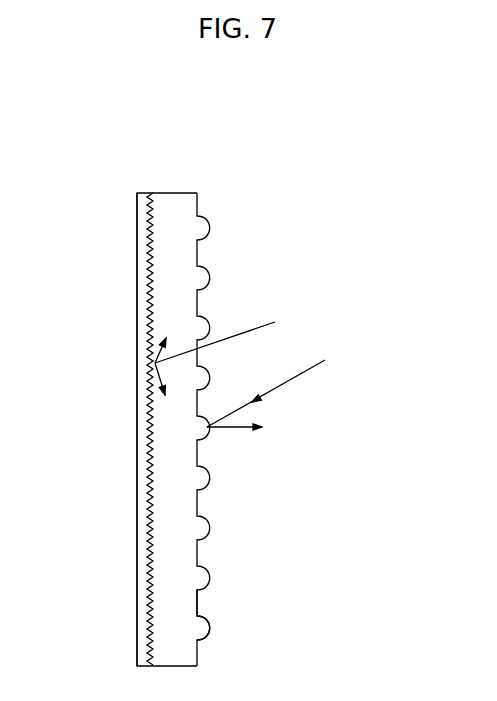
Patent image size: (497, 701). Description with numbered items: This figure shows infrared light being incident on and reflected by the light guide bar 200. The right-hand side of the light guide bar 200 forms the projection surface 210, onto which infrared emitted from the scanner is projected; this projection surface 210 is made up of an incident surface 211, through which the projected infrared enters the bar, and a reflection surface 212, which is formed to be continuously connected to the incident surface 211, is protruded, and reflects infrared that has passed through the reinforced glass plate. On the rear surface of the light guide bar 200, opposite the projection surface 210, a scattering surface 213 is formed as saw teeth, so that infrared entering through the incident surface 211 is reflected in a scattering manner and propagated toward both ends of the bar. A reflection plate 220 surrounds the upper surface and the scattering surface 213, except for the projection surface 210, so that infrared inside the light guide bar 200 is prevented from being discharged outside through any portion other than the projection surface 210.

The light guide bar 200 is at (207, 184).
The projection surface 210 is at (289, 583).
The incident surface 211 is at (198, 601).
The reflection surface 212 is at (206, 628).
The scattering surface 213 is at (151, 460).
The reflection plate 220 is at (137, 607).